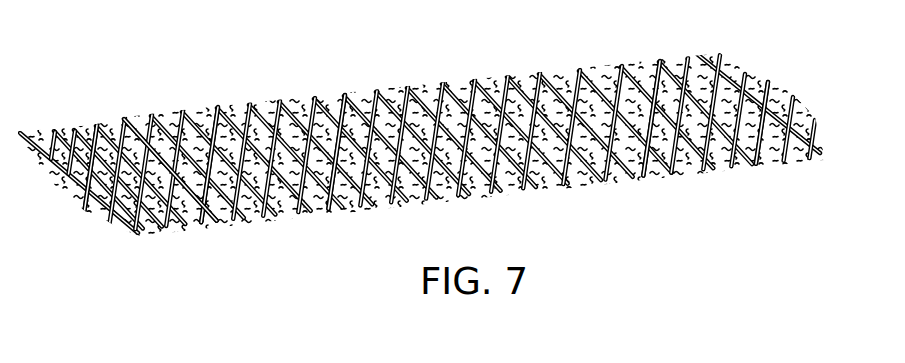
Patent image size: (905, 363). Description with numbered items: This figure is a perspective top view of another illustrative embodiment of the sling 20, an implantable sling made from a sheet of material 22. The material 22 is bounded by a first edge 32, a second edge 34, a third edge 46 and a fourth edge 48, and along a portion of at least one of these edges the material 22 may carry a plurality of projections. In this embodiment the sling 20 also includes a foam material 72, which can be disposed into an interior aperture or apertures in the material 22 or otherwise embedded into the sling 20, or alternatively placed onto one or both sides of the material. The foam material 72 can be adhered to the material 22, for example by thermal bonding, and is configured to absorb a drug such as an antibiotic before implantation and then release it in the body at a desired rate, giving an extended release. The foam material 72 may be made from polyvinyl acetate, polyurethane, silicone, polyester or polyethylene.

The sling 20 is at (481, 54).
The material 22 is at (346, 98).
The first edge 32 is at (218, 107).
The second edge 34 is at (224, 219).
The third edge 46 is at (80, 194).
The fourth edge 48 is at (769, 86).
The foam material 72 is at (665, 66).